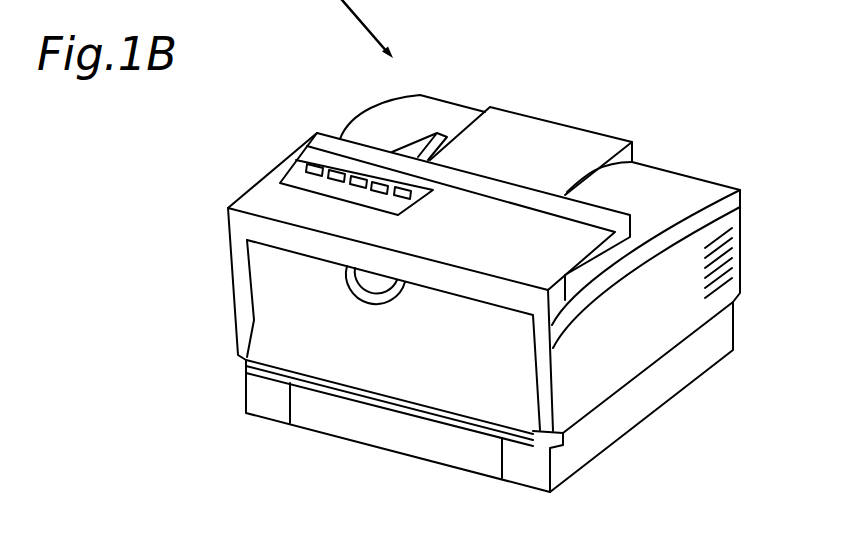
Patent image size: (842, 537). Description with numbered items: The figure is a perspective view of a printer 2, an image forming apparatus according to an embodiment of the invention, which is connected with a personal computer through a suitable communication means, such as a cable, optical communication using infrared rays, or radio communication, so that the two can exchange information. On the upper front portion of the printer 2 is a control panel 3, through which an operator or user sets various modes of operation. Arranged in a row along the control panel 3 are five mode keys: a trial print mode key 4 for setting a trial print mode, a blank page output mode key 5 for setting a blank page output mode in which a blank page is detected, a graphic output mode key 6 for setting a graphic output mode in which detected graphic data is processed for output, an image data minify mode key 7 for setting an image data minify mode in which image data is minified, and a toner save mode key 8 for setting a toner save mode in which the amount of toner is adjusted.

The printer 2 is at (652, 141).
The control panel 3 is at (305, 158).
The trial print mode key 4 is at (310, 161).
The blank page output mode key 5 is at (330, 179).
The graphic output mode key 6 is at (355, 187).
The image data minify mode key 7 is at (377, 196).
The toner save mode key 8 is at (412, 197).